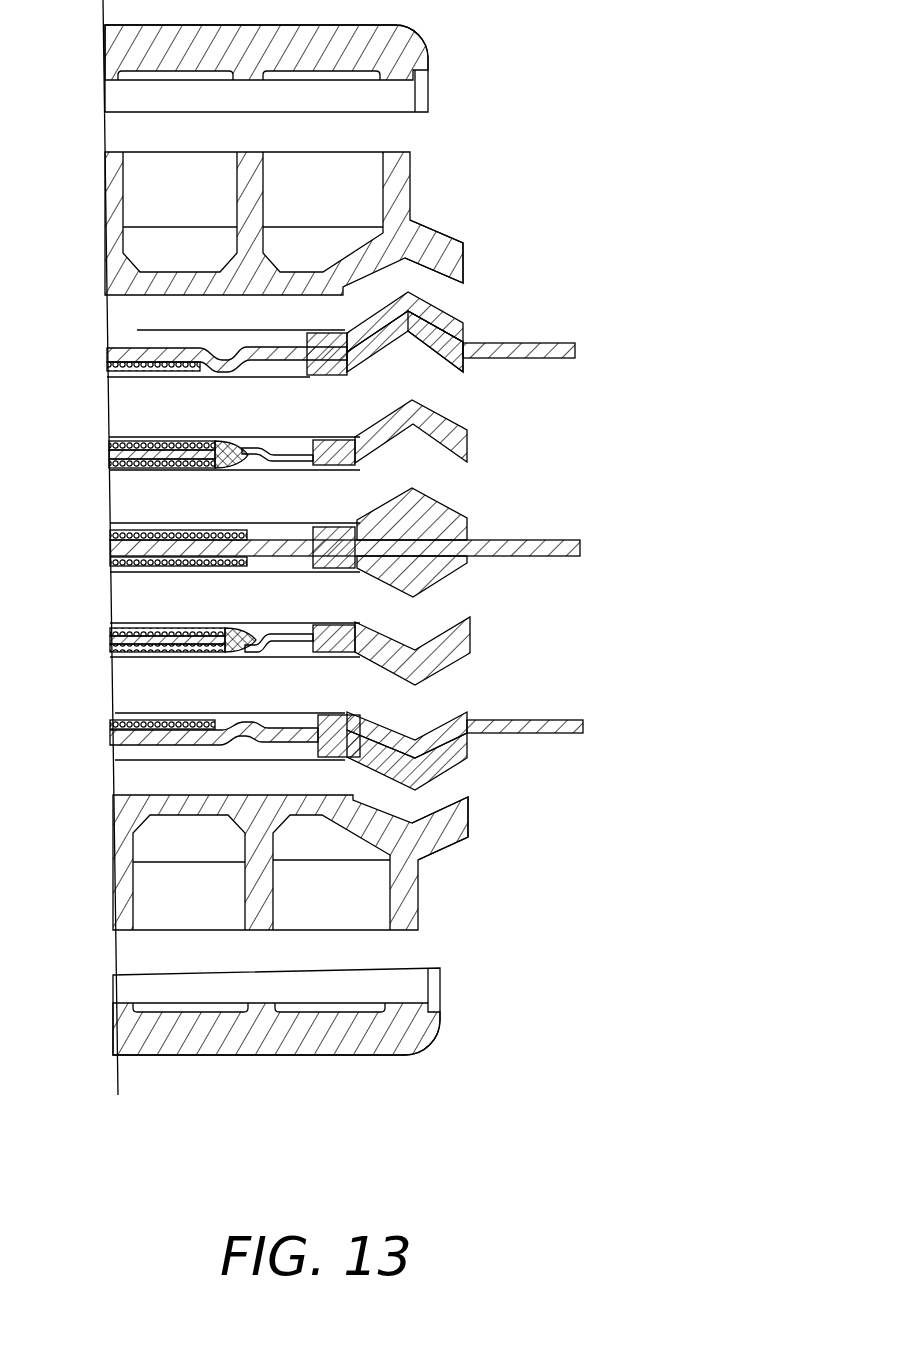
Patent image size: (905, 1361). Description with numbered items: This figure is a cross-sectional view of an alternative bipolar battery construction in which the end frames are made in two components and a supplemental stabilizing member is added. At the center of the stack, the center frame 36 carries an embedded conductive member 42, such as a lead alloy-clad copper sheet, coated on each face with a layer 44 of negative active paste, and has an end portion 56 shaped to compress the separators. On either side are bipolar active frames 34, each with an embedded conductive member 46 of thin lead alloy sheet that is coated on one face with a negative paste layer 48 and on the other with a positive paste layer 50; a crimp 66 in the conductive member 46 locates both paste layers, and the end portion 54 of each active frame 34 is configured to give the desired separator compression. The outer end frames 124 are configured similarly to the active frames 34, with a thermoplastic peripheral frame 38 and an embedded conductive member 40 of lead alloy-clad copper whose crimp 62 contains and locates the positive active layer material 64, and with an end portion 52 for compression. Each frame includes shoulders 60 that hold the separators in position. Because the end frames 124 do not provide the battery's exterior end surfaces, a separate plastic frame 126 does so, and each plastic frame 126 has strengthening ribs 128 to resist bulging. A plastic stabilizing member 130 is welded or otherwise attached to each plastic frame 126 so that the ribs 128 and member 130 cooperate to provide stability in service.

The bipolar active frame 34 is at (346, 547).
The center frame 36 is at (352, 539).
The thermoplastic peripheral frame 38 is at (367, 318).
The conductive member 40 is at (437, 333).
The conductive member 42 is at (440, 540).
The layer of negative active paste 44 is at (219, 530).
The conductive member 46 is at (290, 450).
The negative paste layer 48 is at (172, 442).
The positive paste layer 50 is at (162, 467).
The end portion 52 is at (443, 363).
The end portion 54 is at (453, 418).
The end portion 56 is at (440, 498).
The shoulder 60 is at (345, 375).
The crimp 62 is at (170, 350).
The positive active layer material 64 is at (130, 372).
The crimp 66 is at (245, 462).
The end frame 124 is at (321, 539).
The plastic frame 126 is at (490, 247).
The strengthening rib 128 is at (359, 544).
The plastic stabilizing member 130 is at (438, 62).